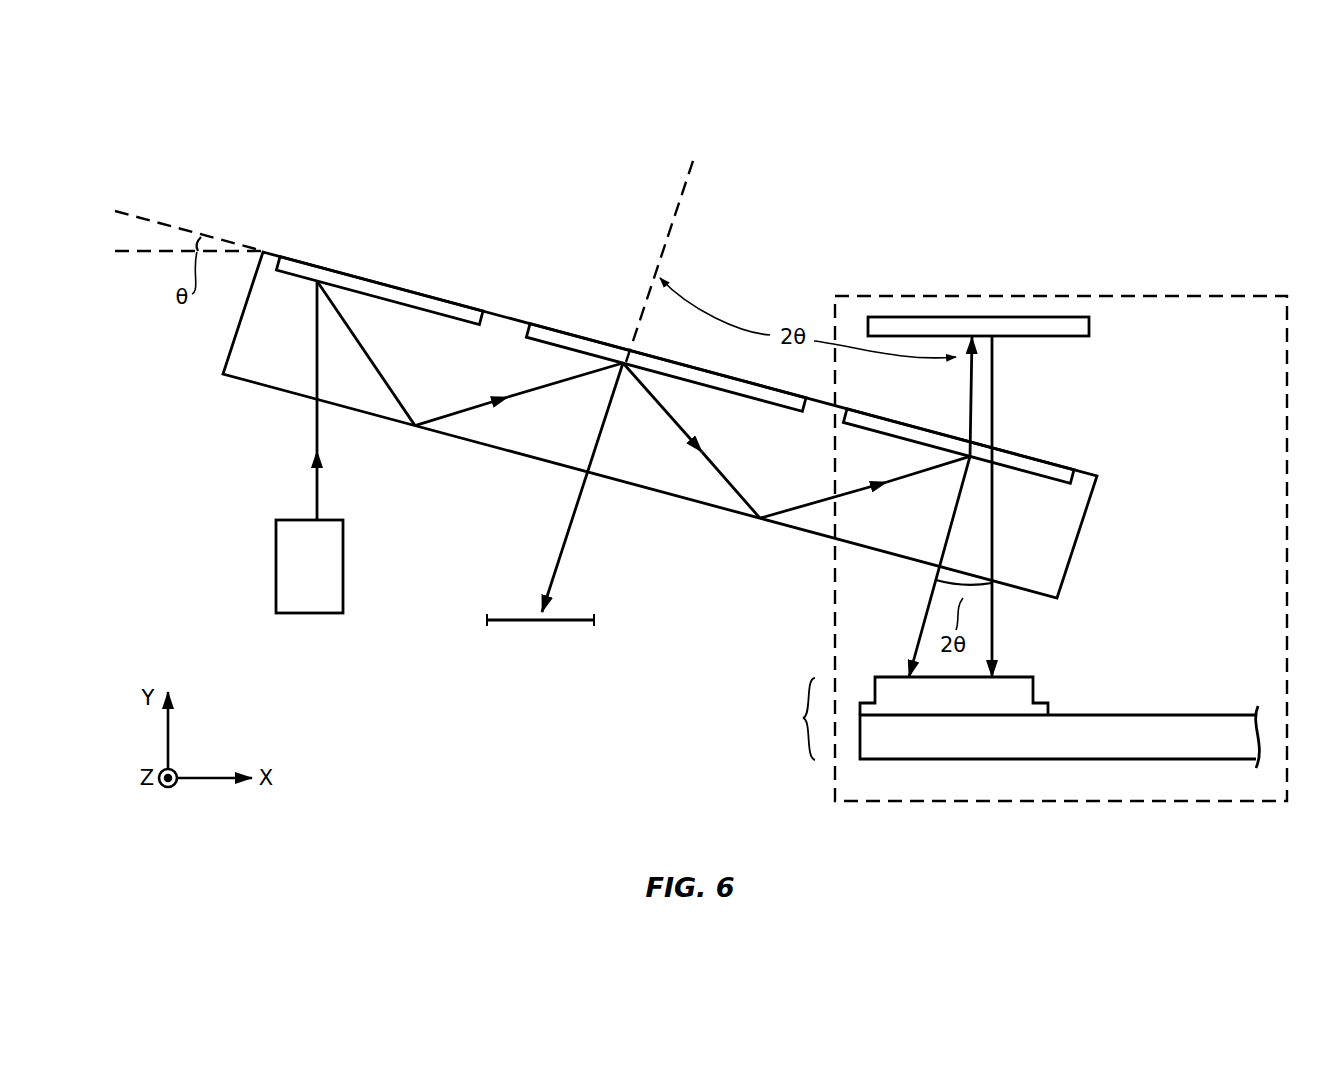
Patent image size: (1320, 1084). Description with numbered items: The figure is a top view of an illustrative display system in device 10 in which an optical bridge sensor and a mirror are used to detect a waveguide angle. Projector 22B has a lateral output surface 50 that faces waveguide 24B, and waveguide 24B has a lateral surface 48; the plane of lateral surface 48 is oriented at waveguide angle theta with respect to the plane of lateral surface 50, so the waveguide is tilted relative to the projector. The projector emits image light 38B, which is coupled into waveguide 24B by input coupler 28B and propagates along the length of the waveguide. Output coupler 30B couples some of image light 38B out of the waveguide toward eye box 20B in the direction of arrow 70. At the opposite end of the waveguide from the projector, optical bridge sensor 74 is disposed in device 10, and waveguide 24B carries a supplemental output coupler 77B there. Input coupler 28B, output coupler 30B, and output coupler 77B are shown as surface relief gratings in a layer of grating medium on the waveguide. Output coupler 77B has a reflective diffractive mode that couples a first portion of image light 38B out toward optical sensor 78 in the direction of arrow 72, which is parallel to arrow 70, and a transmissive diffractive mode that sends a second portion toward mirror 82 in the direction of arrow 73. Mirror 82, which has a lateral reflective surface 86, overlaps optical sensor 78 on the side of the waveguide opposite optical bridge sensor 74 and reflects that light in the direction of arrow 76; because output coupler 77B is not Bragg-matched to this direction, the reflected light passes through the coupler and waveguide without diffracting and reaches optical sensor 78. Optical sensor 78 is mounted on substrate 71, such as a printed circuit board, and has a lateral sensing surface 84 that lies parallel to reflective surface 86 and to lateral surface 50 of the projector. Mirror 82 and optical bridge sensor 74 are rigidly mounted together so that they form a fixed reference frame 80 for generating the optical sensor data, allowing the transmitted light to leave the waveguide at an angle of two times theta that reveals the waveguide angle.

The device 10 is at (1153, 149).
The waveguide 24B is at (232, 346).
The input coupler 28B is at (379, 282).
The output coupler 30B is at (553, 330).
The output coupler 77B is at (1098, 478).
The image light 38B is at (316, 480).
The lateral surface 48 is at (394, 429).
The lateral surface 50 is at (294, 527).
The projector 22B is at (340, 567).
The arrow 70 is at (569, 532).
The eye box 20B is at (596, 620).
The fixed reference frame 80 is at (1097, 803).
The mirror 82 is at (975, 323).
The lateral surface 86 is at (1060, 341).
The arrow 73 is at (970, 382).
The arrow 72 is at (923, 612).
The arrow 76 is at (996, 623).
The optical sensor 78 is at (1036, 686).
The lateral surface 84 is at (891, 684).
The optical bridge sensor 74 is at (794, 719).
The substrate 71 is at (984, 757).